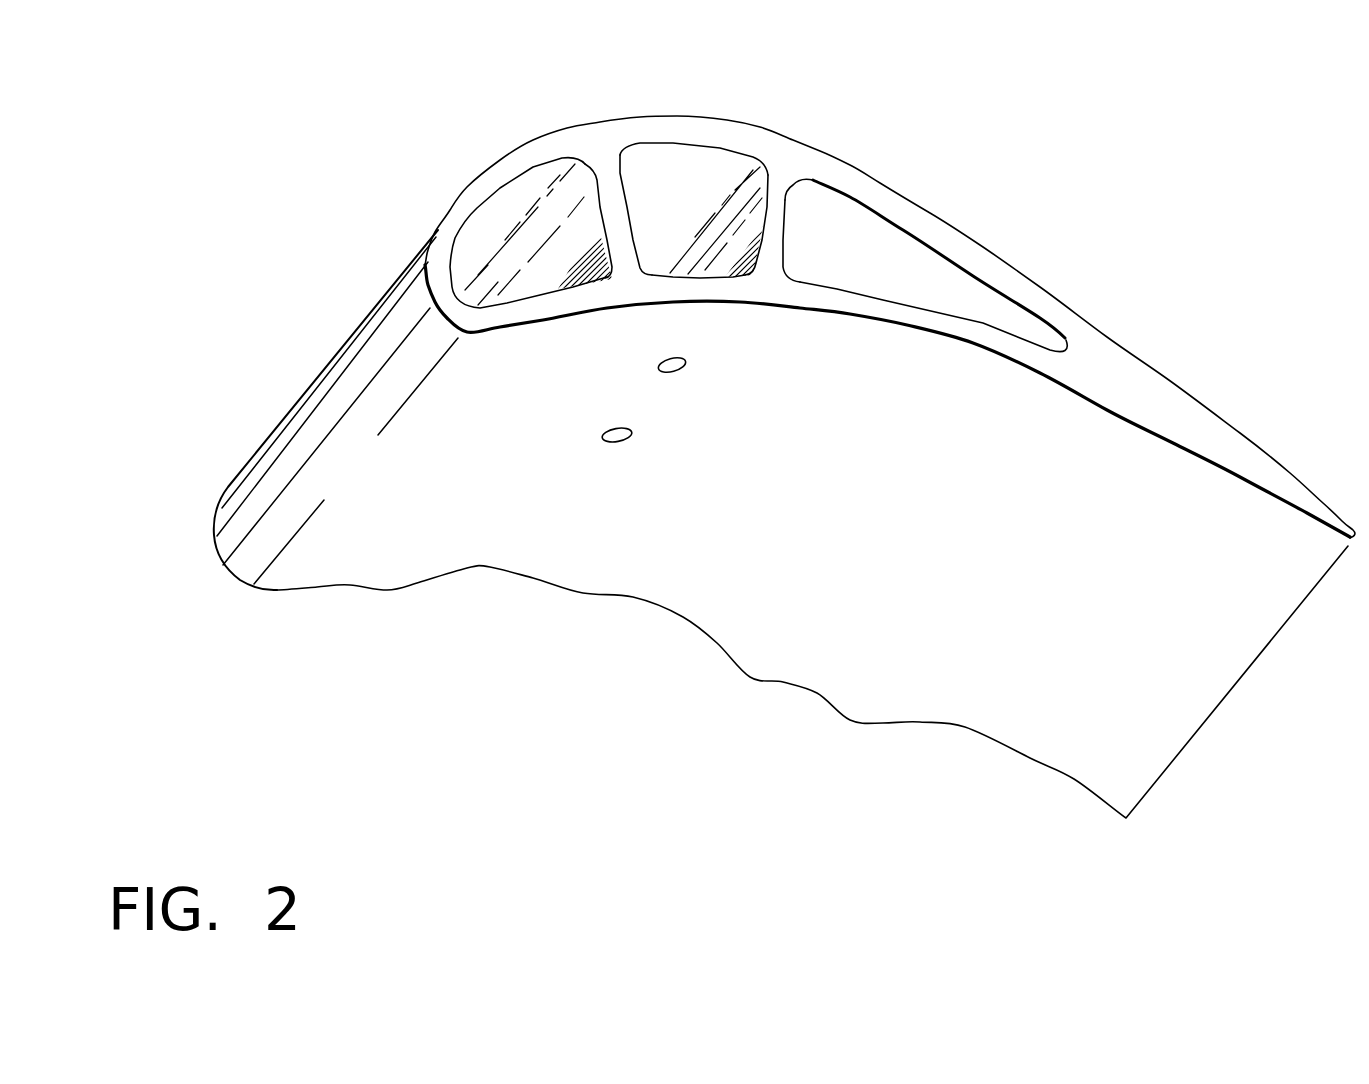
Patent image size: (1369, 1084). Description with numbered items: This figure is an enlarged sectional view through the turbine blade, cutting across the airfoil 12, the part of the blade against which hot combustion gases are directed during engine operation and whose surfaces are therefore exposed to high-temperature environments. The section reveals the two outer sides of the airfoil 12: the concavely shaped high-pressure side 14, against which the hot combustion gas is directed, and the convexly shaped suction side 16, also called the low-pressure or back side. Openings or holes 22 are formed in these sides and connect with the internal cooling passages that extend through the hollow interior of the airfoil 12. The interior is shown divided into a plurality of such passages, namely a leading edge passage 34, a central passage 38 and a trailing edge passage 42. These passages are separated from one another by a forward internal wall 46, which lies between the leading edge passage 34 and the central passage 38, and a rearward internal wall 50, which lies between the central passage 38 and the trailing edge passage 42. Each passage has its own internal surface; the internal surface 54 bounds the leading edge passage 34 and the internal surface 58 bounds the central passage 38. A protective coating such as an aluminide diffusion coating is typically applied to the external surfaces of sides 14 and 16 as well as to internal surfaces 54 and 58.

The airfoil 12 is at (262, 140).
The high-pressure side 14 is at (802, 539).
The suction side 16 is at (760, 128).
The openings or holes 22 is at (620, 433).
The leading edge passage 34 is at (520, 166).
The central passage 38 is at (668, 134).
The trailing edge passage 42 is at (940, 275).
The forward internal wall 46 is at (607, 180).
The rearward internal wall 50 is at (787, 188).
The internal surface 54 is at (502, 207).
The internal surface 58 is at (723, 259).